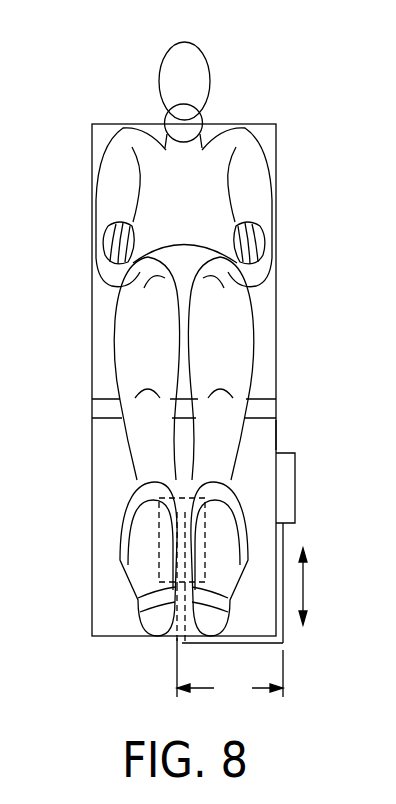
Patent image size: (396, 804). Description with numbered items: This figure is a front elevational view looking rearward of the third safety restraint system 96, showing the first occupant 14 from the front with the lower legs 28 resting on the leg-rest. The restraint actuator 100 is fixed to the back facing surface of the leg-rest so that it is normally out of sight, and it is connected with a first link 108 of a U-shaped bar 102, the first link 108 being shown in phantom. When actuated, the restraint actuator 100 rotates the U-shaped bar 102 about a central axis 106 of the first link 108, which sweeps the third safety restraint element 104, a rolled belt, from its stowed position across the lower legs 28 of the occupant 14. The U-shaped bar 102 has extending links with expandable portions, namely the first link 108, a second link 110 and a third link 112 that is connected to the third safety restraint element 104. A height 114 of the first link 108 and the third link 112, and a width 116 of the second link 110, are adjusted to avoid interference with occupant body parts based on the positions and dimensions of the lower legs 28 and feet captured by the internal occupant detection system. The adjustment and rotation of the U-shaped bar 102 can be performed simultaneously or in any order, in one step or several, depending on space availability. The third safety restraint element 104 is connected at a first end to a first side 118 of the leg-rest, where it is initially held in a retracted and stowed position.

The first occupant 14 is at (292, 210).
The third safety restraint system 96 is at (235, 71).
The lower legs 28 is at (245, 427).
The first side of the leg-rest 118 is at (278, 433).
The third safety restraint element 104 is at (285, 486).
The third link 112 is at (283, 528).
The second link 110 is at (283, 643).
The height 114 is at (303, 586).
The width 116 is at (230, 670).
The central axis 106 is at (183, 552).
The restraint actuator 100 is at (185, 497).
The U-shaped bar 102 is at (175, 645).
The first link 108 is at (173, 610).